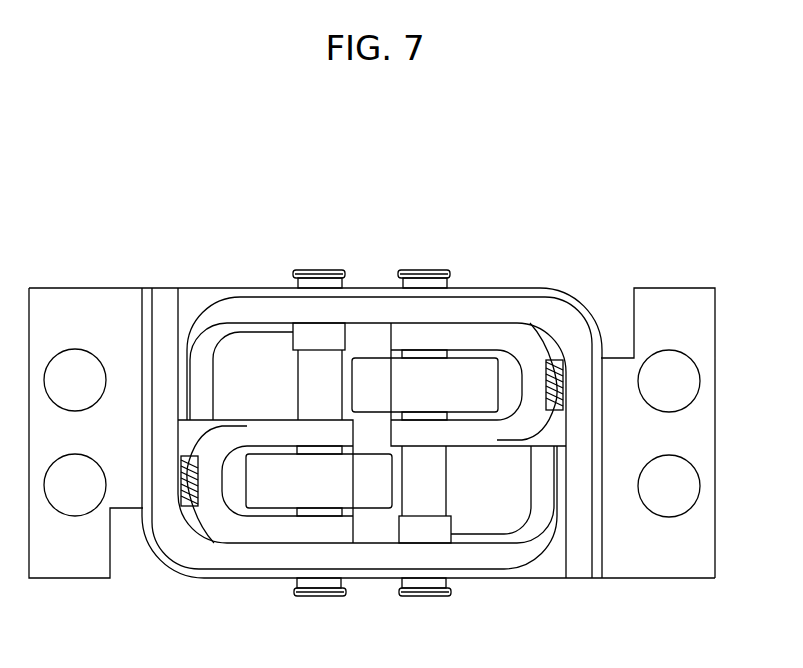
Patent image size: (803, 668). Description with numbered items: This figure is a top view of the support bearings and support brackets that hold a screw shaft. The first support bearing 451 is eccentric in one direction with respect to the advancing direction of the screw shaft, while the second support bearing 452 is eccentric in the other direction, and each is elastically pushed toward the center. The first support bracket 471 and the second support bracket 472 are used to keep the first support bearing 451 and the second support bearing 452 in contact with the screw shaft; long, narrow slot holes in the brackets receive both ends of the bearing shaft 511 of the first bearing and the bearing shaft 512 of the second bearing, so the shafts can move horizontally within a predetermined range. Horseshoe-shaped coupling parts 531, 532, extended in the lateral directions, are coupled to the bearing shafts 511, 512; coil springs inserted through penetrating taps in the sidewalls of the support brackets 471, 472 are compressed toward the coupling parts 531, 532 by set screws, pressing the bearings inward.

The first support bearing 451 is at (274, 483).
The second support bearing 452 is at (470, 383).
The first support bracket 471 is at (286, 554).
The second support bracket 472 is at (458, 312).
The bearing shaft 511 is at (312, 386).
The bearing shaft 512 is at (432, 480).
The coupling part 531 is at (216, 509).
The coupling part 532 is at (528, 357).